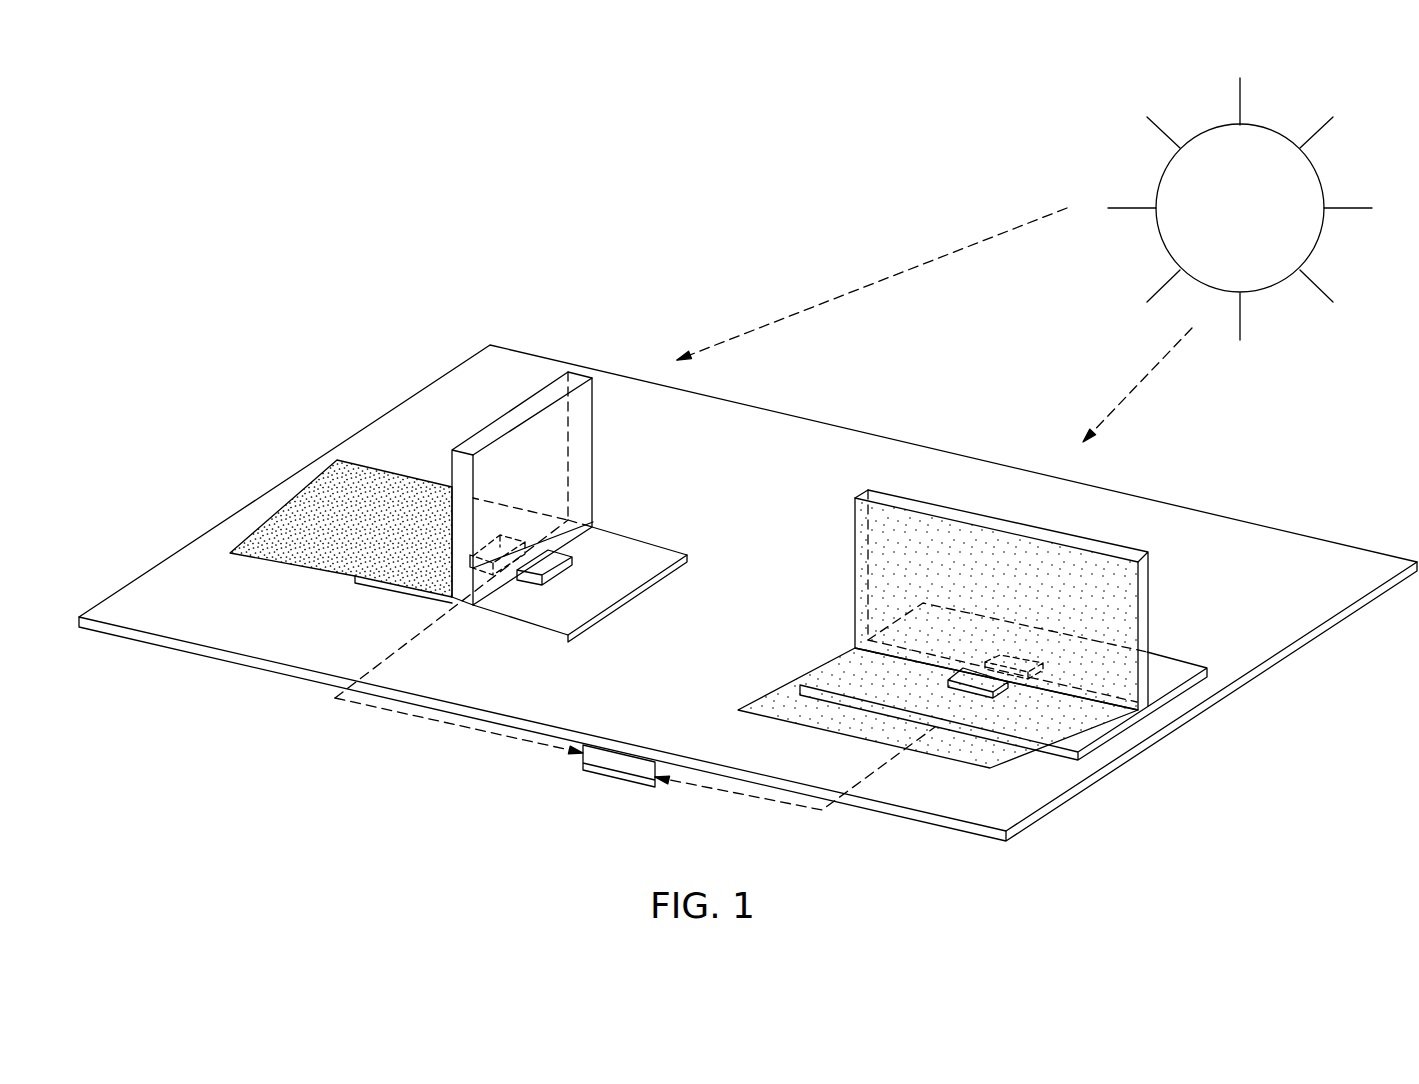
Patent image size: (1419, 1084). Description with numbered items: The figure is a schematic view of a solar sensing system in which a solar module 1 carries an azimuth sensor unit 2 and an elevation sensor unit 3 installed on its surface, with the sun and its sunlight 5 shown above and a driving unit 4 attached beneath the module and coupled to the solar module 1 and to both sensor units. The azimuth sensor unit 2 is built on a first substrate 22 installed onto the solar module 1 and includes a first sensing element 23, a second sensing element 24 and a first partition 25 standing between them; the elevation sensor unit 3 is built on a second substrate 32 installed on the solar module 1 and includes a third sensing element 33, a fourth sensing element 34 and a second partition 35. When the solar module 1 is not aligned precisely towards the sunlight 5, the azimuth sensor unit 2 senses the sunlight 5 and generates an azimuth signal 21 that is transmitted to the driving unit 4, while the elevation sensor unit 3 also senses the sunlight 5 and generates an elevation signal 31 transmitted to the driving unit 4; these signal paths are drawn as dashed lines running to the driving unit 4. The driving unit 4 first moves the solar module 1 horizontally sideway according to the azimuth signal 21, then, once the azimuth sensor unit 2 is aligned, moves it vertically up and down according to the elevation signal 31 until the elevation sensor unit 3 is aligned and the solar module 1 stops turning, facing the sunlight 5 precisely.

The solar module 1 is at (238, 638).
The azimuth sensor unit 2 is at (942, 487).
The elevation sensor unit 3 is at (592, 357).
The driving unit 4 is at (618, 778).
The sunlight 5 is at (1188, 172).
The azimuth signal 21 is at (780, 802).
The first substrate 22 is at (1172, 672).
The first sensing element 23 is at (993, 693).
The second sensing element 24 is at (993, 660).
The first partition 25 is at (923, 502).
The elevation signal 31 is at (423, 718).
The second substrate 32 is at (632, 568).
The third sensing element 33 is at (533, 577).
The fourth sensing element 34 is at (473, 567).
The second partition 35 is at (540, 403).